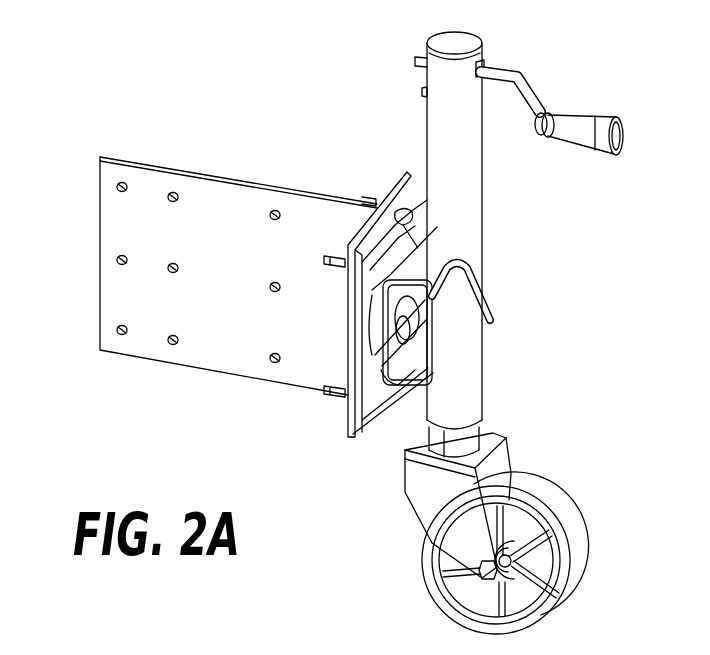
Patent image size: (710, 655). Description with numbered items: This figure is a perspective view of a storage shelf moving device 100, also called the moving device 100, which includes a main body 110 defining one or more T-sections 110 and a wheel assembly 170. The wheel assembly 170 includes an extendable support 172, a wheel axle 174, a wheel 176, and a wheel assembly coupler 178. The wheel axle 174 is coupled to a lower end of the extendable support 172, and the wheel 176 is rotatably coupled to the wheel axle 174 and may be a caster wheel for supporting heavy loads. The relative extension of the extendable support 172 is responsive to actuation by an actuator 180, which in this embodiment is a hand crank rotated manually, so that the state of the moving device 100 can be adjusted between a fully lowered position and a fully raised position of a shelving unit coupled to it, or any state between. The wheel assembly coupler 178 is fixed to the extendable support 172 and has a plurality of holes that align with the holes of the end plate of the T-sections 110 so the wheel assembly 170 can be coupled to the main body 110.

The storage shelf moving device 100 is at (122, 71).
The main body 110 is at (197, 197).
The wheel assembly 170 is at (472, 57).
The extendable support 172 is at (472, 343).
The wheel axle 174 is at (416, 446).
The wheel 176 is at (540, 503).
The wheel assembly coupler 178 is at (421, 232).
The actuator 180 is at (606, 122).